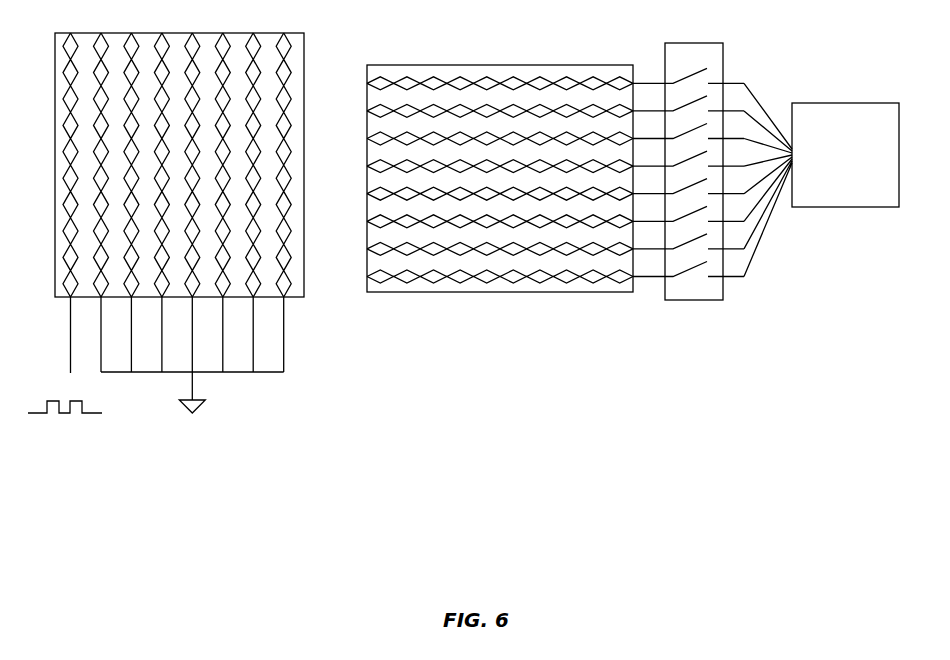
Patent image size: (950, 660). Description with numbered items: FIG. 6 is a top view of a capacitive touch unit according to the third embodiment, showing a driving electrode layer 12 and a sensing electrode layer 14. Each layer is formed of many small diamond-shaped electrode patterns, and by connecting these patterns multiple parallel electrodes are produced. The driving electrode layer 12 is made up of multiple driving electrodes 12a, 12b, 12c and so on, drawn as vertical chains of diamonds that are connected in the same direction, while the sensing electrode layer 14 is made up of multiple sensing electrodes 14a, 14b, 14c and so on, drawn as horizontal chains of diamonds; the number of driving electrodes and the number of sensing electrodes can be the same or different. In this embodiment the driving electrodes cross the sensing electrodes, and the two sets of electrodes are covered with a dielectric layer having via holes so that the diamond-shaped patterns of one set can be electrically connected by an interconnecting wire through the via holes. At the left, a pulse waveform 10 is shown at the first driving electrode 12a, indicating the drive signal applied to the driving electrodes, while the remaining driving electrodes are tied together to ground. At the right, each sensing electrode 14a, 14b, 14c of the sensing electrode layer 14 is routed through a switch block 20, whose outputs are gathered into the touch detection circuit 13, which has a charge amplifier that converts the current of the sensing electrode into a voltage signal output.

The drive pulse signal 10 is at (65, 420).
The driving electrode layer 12 is at (293, 92).
The driving electrode 12a is at (60, 203).
The driving electrode 12b is at (91, 202).
The driving electrode 12c is at (122, 202).
The touch detection circuit 13 is at (815, 110).
The sensing electrode layer 14 is at (458, 70).
The sensing electrode 14a is at (514, 285).
The sensing electrode 14b is at (514, 258).
The sensing electrode 14c is at (513, 229).
The switch unit 20 is at (685, 48).